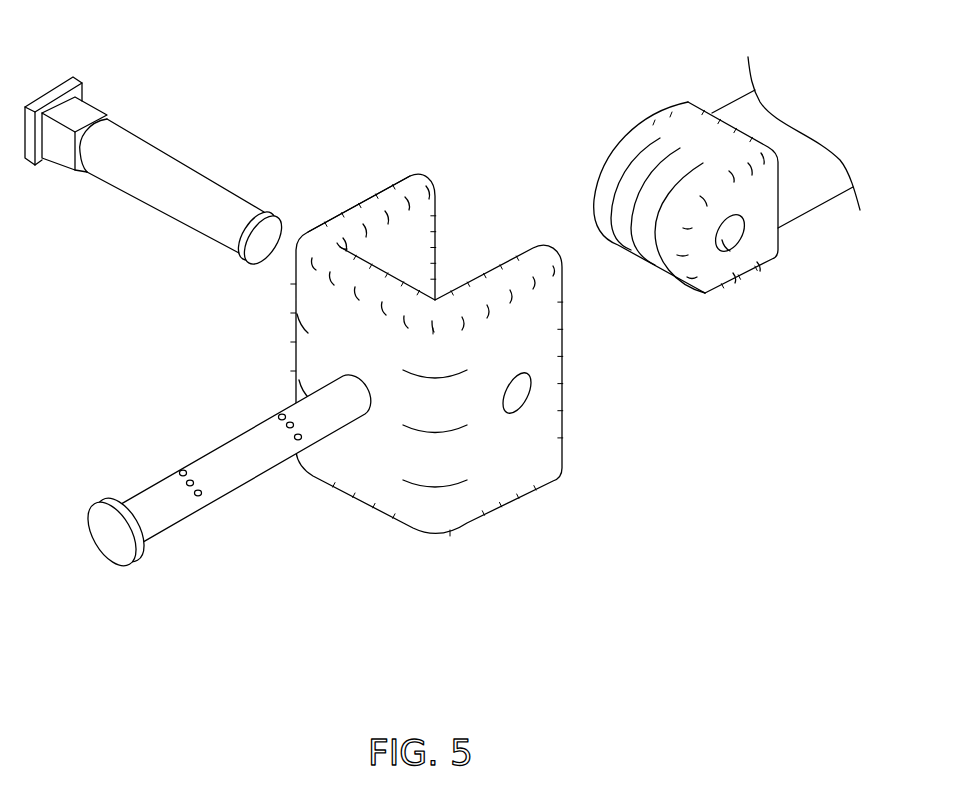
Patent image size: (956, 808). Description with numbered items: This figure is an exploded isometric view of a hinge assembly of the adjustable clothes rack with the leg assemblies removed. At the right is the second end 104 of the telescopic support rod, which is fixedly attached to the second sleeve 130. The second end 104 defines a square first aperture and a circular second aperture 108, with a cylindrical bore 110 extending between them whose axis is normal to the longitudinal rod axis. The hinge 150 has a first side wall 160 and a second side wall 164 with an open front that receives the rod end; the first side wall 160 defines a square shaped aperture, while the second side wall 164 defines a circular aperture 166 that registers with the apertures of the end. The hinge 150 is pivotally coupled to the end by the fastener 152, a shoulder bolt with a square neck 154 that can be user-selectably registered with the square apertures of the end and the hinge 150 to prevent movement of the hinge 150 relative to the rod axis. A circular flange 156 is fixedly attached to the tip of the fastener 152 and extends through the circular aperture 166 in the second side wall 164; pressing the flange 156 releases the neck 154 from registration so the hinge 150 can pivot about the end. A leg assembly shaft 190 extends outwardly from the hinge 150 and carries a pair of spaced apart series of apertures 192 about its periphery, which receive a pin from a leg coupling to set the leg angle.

The second end 104 is at (657, 127).
The second aperture 108 is at (725, 252).
The cylindrical bore 110 is at (733, 238).
The second sleeve 130 is at (730, 103).
The hinge 150 is at (364, 383).
The fastener 152 is at (198, 132).
The square neck 154 is at (85, 113).
The circular flange 156 is at (270, 222).
The first side wall 160 is at (413, 175).
The second side wall 164 is at (538, 463).
The circular aperture 166 is at (530, 390).
The leg assembly shaft 190 is at (142, 500).
The shaft apertures 192 is at (292, 423).